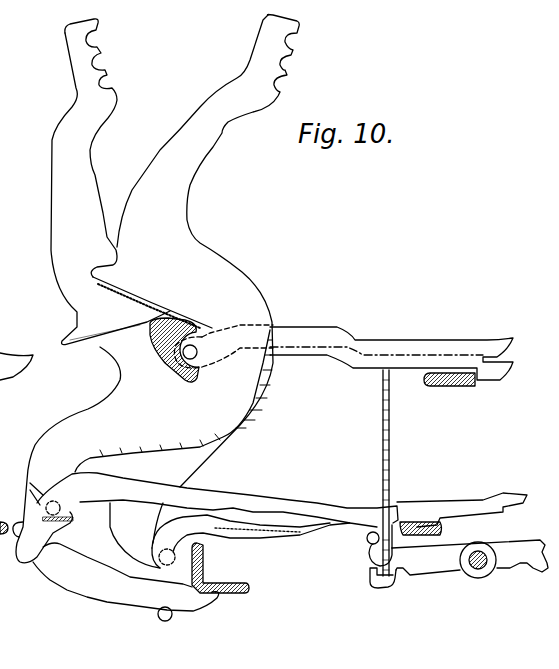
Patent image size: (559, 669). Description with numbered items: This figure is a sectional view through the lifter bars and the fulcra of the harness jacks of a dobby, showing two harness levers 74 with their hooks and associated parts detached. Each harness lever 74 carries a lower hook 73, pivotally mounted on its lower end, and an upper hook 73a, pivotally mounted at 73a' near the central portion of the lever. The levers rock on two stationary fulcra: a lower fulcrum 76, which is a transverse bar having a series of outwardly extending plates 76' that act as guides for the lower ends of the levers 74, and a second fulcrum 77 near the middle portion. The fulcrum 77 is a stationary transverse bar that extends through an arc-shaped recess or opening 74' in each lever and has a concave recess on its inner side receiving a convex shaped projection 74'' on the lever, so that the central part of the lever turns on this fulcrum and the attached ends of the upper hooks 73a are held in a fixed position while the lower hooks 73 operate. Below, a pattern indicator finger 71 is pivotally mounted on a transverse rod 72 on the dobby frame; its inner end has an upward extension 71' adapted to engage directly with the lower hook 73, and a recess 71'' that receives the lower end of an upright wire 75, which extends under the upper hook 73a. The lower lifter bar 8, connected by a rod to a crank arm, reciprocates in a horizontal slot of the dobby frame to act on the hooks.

The harness lever 74 is at (150, 289).
The arc-shaped recess 74' is at (97, 348).
The convex shaped projection 74'' is at (218, 334).
The second fulcrum point 77 is at (153, 338).
The upper hook 73a is at (256, 348).
The pivot of upper hook 73a' is at (223, 351).
The lower hook 73 is at (303, 503).
The upright wire 75 is at (388, 453).
The lower lifter bar 8 is at (450, 382).
The pattern indicator finger 71 is at (458, 575).
The upward extension 71' is at (353, 552).
The recess 71'' is at (365, 587).
The transverse rod 72 is at (478, 569).
The fulcrum point 76 is at (251, 554).
The outwardly extending plates 76' is at (126, 582).